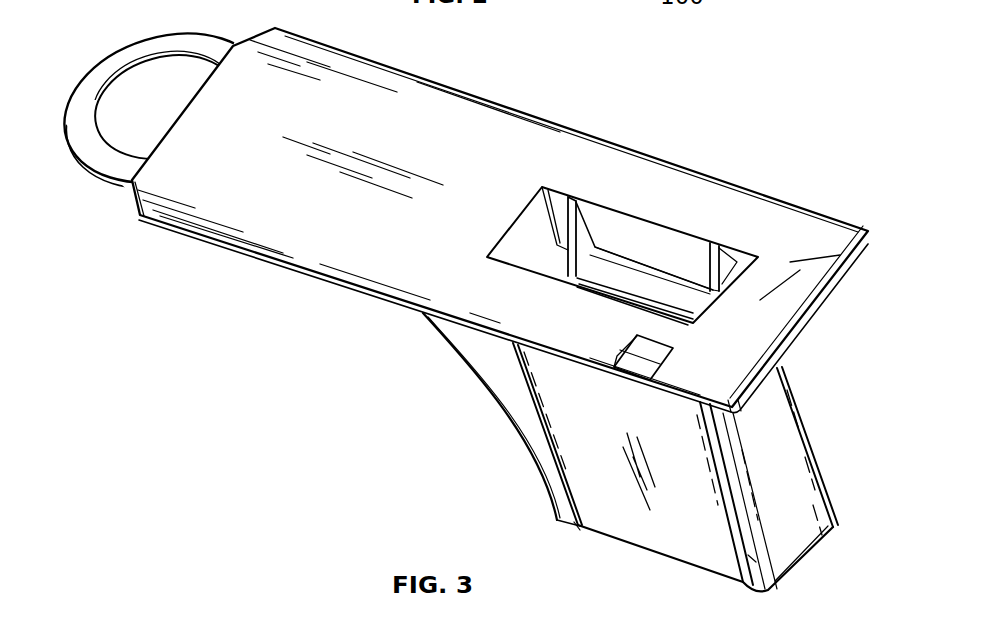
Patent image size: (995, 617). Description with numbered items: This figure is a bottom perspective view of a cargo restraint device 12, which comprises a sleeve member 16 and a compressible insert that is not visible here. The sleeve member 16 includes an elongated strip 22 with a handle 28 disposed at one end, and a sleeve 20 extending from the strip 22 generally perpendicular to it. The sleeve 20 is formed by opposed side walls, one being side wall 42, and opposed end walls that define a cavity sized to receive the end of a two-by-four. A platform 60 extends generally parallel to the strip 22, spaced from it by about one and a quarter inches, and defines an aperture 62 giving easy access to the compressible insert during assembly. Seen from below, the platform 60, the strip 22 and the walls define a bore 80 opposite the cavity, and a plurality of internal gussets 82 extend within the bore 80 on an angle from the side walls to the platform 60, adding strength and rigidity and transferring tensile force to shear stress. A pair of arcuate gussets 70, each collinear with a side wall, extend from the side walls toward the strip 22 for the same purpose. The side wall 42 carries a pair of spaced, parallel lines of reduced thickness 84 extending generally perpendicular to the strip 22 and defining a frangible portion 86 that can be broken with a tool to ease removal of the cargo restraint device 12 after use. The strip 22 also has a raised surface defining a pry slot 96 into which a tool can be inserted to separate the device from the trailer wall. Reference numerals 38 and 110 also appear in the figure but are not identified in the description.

The cargo restraint device 12 is at (895, 200).
The sleeve member 16 is at (608, 136).
The sleeve 20 is at (790, 431).
The elongated strip 22 is at (440, 110).
The handle 28 is at (143, 34).
The end portion 38 is at (298, 66).
The side wall 42 is at (670, 535).
The platform 60 is at (633, 278).
The aperture 62 is at (650, 316).
The arcuate gusset 70 is at (486, 365).
The bore 80 is at (612, 221).
The internal gussets 82 is at (570, 220).
The lines of reduced thickness 84 is at (578, 527).
The frangible portion 86 is at (682, 441).
The pry slot 96 is at (652, 362).
The component 110 is at (781, 0).